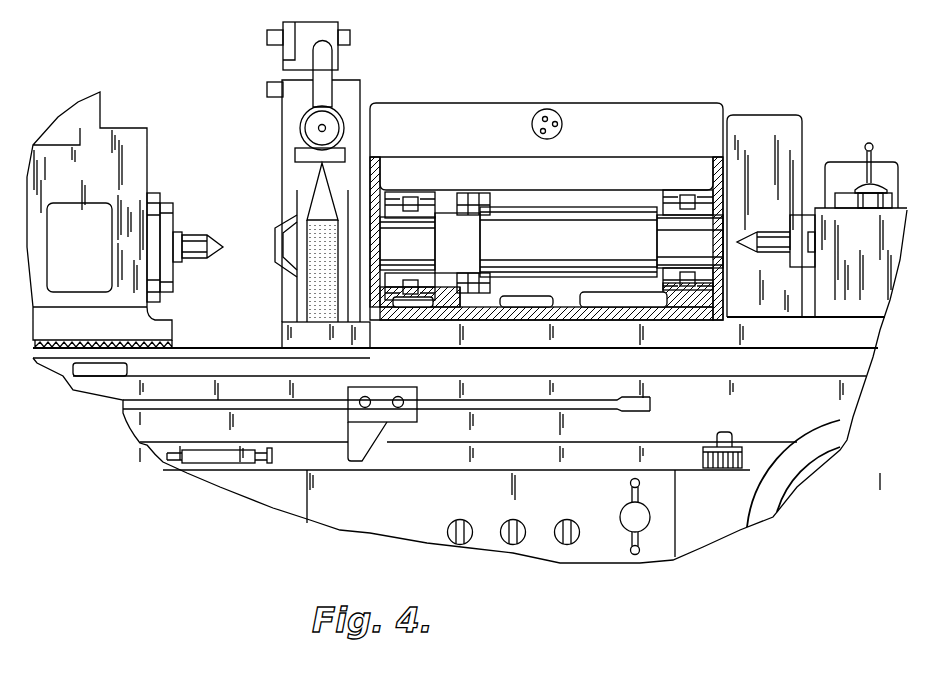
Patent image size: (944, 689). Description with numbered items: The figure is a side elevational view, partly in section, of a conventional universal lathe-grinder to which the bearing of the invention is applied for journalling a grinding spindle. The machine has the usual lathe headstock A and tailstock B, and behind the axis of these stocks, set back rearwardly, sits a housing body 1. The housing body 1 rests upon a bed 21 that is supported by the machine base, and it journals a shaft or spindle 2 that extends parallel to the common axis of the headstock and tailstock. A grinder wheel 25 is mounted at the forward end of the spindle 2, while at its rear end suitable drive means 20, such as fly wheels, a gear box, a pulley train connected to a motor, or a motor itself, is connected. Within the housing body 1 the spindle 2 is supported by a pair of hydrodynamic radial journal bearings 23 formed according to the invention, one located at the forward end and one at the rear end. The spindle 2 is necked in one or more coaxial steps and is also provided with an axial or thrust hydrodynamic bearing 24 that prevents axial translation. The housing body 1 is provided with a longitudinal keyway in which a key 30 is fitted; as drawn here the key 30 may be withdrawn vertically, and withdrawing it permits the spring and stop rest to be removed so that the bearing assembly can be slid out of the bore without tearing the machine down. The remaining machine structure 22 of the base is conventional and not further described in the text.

The housing body 1 is at (413, 112).
The spindle 2 is at (556, 216).
The drive means 20 is at (797, 138).
The bed 21 is at (690, 316).
The bed 22 is at (850, 398).
The hydrodynamic radial journal bearings 23 is at (400, 201).
The axial hydrodynamic bearing 24 is at (470, 201).
The grinder wheel 25 is at (315, 232).
The key 30 is at (654, 164).
The lathe headstock A is at (886, 165).
The tailstock B is at (155, 181).